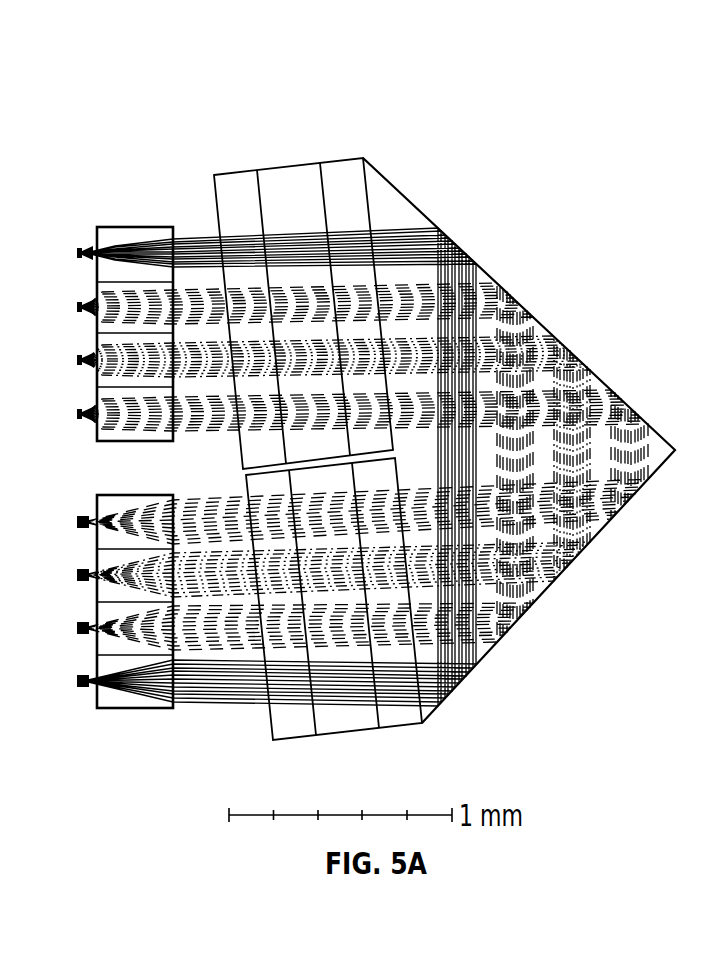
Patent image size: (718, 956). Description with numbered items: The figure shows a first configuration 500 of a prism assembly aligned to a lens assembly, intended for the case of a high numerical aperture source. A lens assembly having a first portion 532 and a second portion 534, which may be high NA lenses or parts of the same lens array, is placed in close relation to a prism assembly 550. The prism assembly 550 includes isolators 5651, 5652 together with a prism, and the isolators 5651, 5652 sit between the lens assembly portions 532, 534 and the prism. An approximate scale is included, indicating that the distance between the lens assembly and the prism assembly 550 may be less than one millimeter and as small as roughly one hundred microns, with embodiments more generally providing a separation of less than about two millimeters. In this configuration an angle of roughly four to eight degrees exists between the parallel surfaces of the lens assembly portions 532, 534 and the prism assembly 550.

The first configuration 500 is at (113, 54).
The second portion of lens assembly 534 is at (138, 227).
The first portion of lens assembly 532 is at (132, 494).
The isolator 5652 is at (233, 174).
The isolator 5651 is at (290, 738).
The prism assembly 550 is at (411, 203).